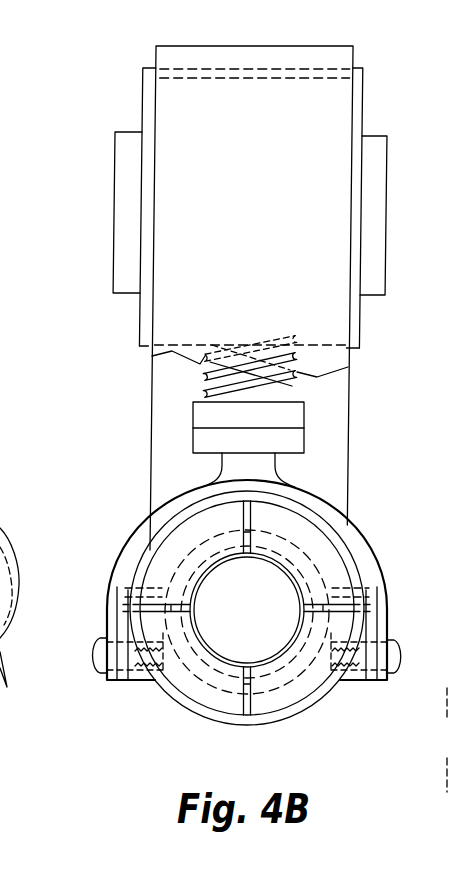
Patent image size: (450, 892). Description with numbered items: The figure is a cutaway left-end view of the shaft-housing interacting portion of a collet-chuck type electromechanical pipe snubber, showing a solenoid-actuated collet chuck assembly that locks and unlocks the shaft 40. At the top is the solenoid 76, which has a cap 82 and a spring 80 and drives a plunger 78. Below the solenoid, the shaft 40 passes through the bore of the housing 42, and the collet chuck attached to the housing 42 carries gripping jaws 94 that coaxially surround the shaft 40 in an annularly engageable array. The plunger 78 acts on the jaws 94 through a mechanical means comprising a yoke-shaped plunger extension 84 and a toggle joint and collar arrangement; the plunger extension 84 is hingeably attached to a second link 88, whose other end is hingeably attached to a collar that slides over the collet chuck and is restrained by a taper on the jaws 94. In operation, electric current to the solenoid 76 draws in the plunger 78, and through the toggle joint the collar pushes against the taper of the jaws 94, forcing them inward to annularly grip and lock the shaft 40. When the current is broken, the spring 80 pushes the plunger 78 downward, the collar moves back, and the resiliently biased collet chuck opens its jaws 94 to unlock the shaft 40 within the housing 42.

The solenoid 76 is at (190, 147).
The plunger 78 is at (200, 373).
The spring 80 is at (200, 376).
The cap 82 is at (205, 415).
The plunger extension 84 is at (120, 582).
The shaft 40 is at (262, 573).
The collet chuck gripping jaws 94 is at (318, 583).
The second link 88 is at (348, 673).
The housing 42 is at (15, 742).